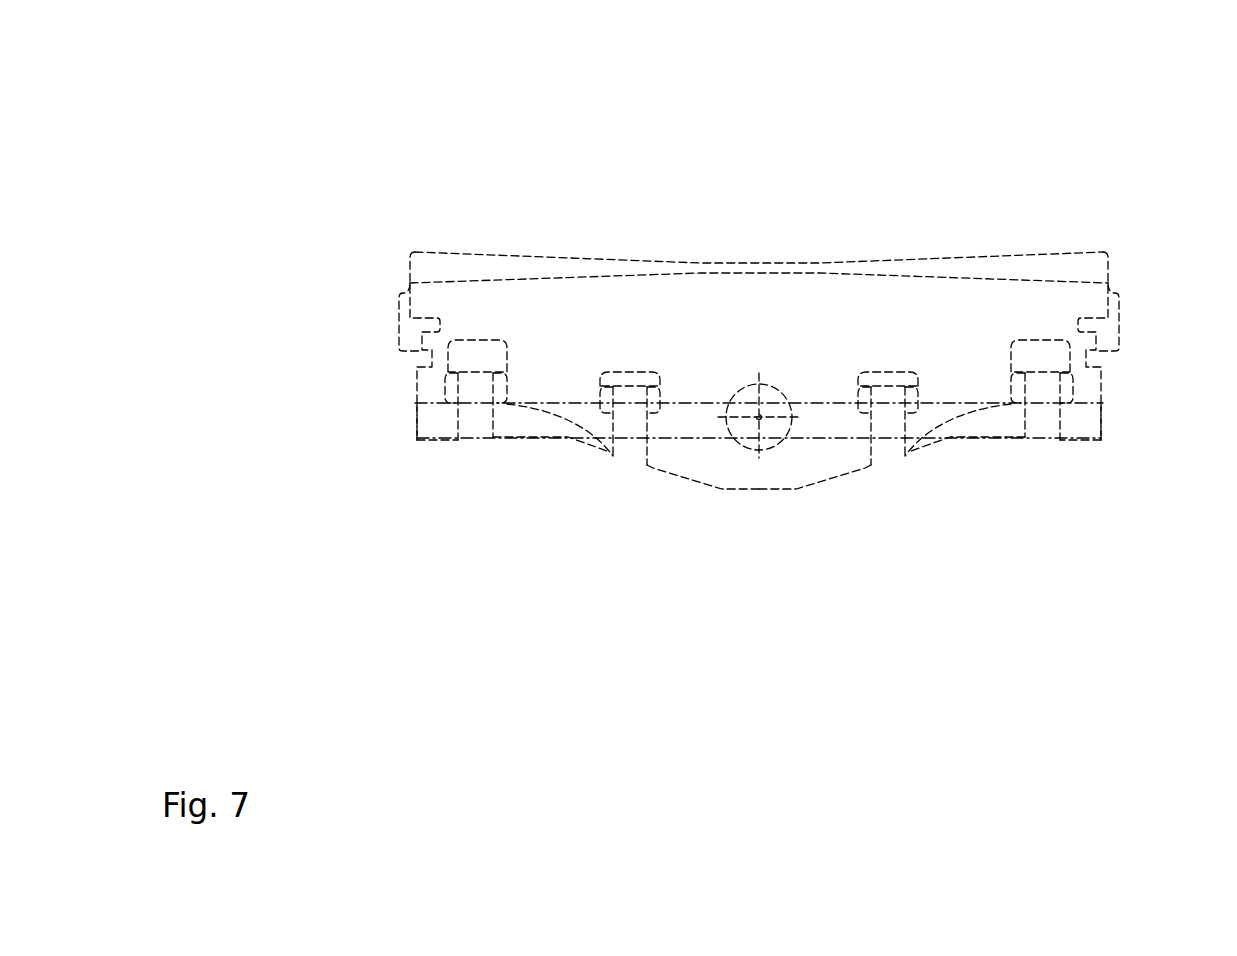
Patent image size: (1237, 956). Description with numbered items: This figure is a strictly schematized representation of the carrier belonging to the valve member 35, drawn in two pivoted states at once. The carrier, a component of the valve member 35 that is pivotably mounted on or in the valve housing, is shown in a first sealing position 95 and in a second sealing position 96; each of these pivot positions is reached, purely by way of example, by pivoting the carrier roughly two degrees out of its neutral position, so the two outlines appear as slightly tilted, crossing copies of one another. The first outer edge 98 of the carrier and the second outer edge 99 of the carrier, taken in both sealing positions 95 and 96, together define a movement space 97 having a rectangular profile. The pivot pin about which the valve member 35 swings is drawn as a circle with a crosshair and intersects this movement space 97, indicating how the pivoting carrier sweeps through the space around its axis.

The valve member 35 is at (1131, 144).
The first sealing position 95 is at (998, 257).
The second sealing position 96 is at (478, 253).
The movement space 97 is at (695, 403).
The first outer edge 98 is at (417, 403).
The second outer edge 99 is at (1082, 403).